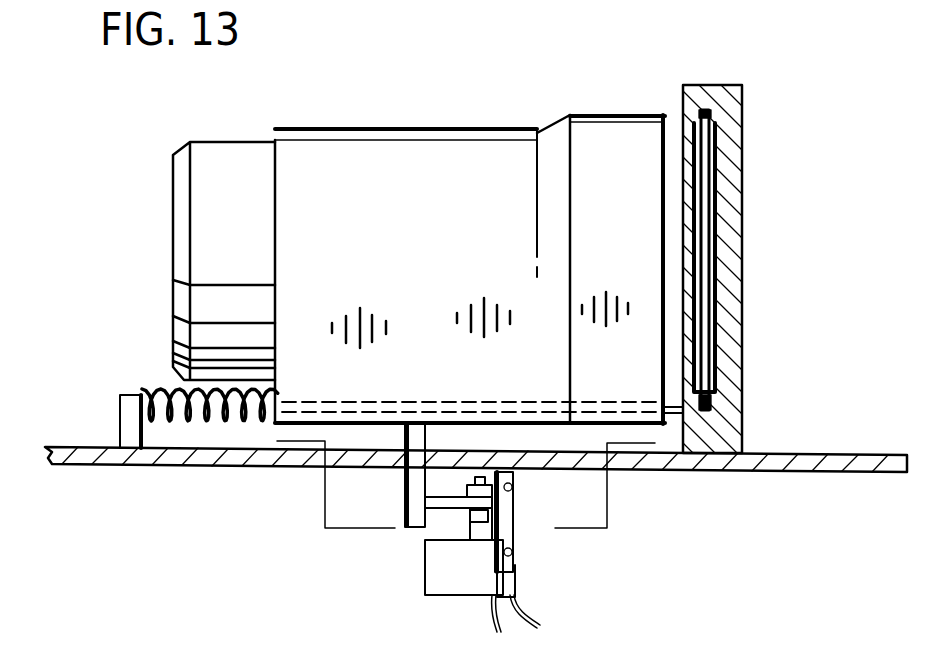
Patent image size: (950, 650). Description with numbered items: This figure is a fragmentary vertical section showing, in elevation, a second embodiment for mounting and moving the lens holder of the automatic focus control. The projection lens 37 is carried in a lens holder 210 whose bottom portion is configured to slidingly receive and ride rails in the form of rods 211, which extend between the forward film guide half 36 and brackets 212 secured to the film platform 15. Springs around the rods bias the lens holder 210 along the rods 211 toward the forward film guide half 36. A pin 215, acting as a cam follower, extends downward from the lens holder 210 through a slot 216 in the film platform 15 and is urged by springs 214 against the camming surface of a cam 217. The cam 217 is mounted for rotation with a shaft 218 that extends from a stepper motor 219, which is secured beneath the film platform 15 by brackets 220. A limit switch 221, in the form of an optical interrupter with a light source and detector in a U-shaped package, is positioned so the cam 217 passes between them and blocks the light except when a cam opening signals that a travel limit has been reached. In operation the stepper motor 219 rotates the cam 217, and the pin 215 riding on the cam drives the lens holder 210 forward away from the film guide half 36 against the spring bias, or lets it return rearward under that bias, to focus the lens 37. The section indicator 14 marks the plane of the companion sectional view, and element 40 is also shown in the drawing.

The section line indicator 14 is at (98, 437).
The film platform 15 is at (713, 463).
The forward film guide half 36 is at (700, 85).
The lens 37 is at (227, 142).
The guide rod 40 is at (707, 172).
The lens holder 210 is at (497, 130).
The rods 211 is at (673, 416).
The brackets 212 is at (125, 428).
The springs 214 is at (230, 423).
The pin 215 is at (405, 512).
The slot 216 is at (388, 458).
The cam 217 is at (440, 508).
The shaft 218 is at (463, 532).
The stepper motor 219 is at (467, 588).
The brackets 220 is at (512, 527).
The limit switch 221 is at (513, 508).